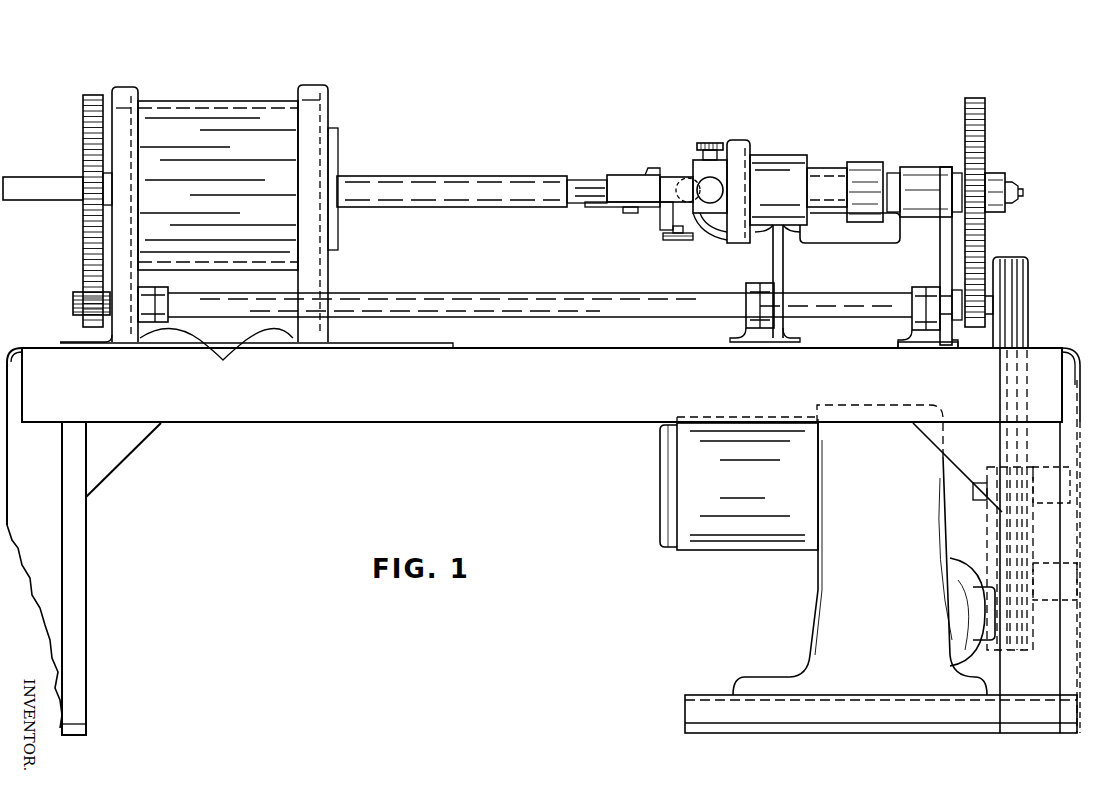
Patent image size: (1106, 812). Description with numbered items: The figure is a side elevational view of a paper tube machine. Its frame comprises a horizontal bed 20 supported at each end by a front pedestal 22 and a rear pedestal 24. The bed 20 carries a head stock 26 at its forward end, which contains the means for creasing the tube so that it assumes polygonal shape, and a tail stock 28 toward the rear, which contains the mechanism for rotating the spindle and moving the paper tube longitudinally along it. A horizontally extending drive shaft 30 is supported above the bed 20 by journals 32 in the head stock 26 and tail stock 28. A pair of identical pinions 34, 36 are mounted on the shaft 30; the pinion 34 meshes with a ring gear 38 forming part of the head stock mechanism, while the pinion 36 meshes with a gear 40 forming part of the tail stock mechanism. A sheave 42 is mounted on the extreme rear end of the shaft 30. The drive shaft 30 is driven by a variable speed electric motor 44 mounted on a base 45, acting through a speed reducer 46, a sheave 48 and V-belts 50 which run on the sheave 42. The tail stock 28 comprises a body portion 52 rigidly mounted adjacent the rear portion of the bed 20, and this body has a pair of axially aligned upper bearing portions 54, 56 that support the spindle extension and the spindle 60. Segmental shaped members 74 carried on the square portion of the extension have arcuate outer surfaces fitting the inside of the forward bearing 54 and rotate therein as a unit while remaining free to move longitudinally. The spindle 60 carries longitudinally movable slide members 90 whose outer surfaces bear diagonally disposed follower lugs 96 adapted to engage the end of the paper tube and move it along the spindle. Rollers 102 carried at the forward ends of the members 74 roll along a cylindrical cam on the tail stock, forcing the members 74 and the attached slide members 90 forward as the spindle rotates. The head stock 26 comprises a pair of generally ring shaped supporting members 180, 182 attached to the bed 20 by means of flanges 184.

The horizontal bed 20 is at (460, 397).
The front pedestal 22 is at (76, 625).
The rear pedestal 24 is at (1053, 620).
The head stock 26 is at (195, 98).
The tail stock 28 is at (853, 160).
The drive shaft 30 is at (455, 300).
The journals 32 is at (148, 287).
The pinion 34 is at (97, 332).
The pinion 36 is at (978, 328).
The ring gear 38 is at (92, 93).
The gear 40 is at (975, 96).
The sheave 42 is at (1028, 268).
The variable speed electric motor 44 is at (663, 492).
The base 45 is at (840, 620).
The speed reducer 46 is at (947, 563).
The sheave 48 is at (1027, 630).
The V-belts 50 is at (1025, 372).
The body portion 52 is at (852, 276).
The forward bearing portion 54 is at (775, 155).
The upper bearing portion 56 is at (918, 165).
The spindle 60 is at (495, 172).
The segmental shaped members 74 is at (822, 168).
The slide members 90 is at (615, 173).
The follower lugs 96 is at (700, 160).
The rollers 102 is at (710, 142).
The ring shaped supporting member 180 is at (126, 86).
The ring shaped supporting member 182 is at (310, 84).
The flanges 184 is at (216, 356).